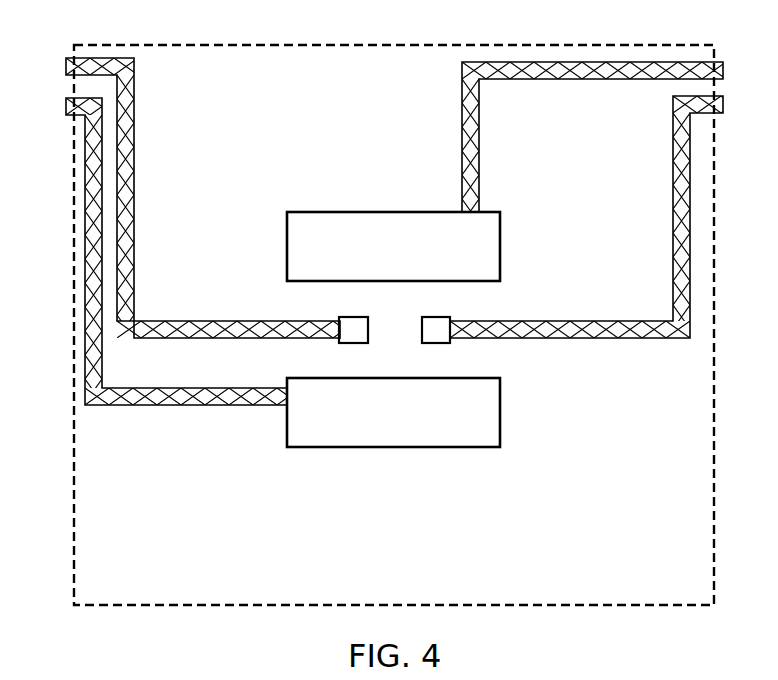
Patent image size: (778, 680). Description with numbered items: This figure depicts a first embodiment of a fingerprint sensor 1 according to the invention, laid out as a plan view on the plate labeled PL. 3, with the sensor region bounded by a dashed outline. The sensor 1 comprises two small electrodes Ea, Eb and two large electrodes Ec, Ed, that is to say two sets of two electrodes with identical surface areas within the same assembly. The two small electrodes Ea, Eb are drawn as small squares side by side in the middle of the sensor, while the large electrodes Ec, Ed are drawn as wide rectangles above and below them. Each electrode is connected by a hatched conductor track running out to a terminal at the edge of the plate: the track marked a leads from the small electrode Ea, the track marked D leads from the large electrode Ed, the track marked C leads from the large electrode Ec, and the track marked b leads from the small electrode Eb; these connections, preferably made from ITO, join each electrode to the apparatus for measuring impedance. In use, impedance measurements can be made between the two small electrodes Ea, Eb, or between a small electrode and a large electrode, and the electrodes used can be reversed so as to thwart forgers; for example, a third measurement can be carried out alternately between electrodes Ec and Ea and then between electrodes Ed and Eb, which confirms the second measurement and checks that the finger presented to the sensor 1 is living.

The plate PL. 3 is at (408, 308).
The fingerprint sensor 1 is at (627, 158).
The conductor strip a is at (185, 198).
The finger D is at (157, 249).
The conductor strip C is at (607, 137).
The conductor strip b is at (601, 215).
The large electrode Ec is at (396, 238).
The large electrode Ed is at (395, 420).
The small electrode Ea is at (358, 331).
The small electrode Eb is at (432, 337).